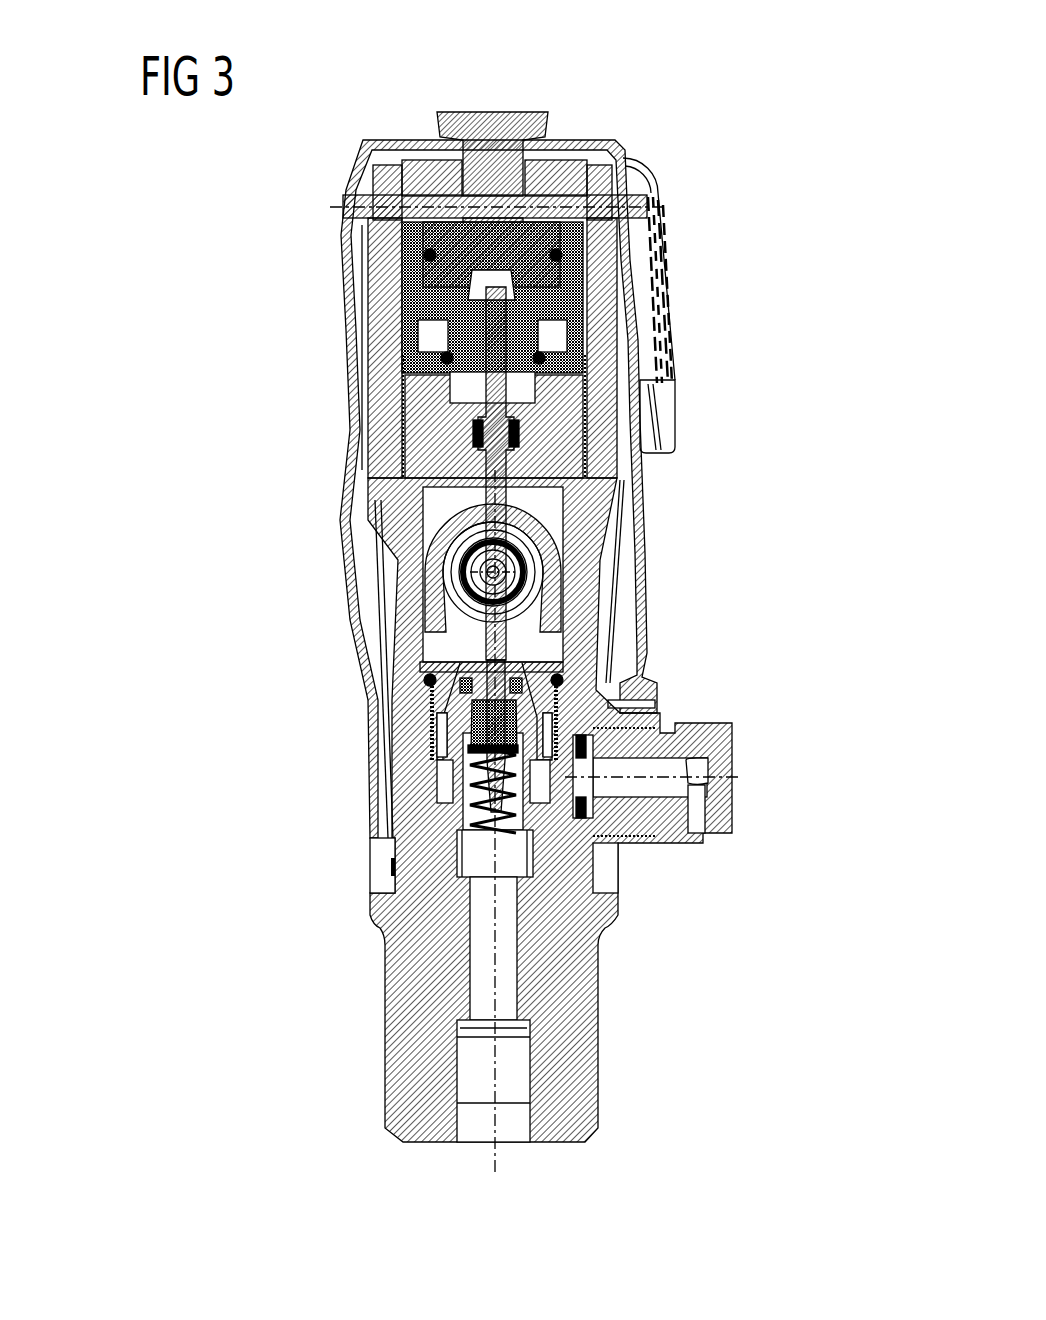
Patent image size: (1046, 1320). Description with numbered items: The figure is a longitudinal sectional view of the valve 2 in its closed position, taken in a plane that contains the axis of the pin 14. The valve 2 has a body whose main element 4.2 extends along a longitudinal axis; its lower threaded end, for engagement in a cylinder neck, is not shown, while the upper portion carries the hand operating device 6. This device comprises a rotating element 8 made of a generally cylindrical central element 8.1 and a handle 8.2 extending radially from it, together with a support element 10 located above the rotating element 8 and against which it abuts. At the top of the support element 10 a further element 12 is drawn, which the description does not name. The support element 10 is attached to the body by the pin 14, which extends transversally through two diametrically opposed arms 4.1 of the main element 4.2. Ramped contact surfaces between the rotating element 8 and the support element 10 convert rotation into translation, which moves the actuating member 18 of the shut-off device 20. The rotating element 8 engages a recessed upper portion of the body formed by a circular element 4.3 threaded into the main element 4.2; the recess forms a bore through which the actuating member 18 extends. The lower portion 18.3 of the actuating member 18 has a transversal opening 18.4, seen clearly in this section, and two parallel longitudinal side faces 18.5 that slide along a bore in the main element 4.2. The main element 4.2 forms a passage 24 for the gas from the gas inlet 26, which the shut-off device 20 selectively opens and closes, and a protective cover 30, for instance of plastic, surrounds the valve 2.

The valve 2 is at (461, 623).
The arms 4.1 is at (380, 243).
The main element 4.2 is at (385, 527).
The circular element 4.3 is at (415, 415).
The hand operating device 6 is at (781, 312).
The rotating element 8 is at (714, 305).
The central element 8.1 is at (573, 313).
The handle 8.2 is at (660, 405).
The support element 10 is at (412, 167).
The plug 12 is at (476, 130).
The pin 14 is at (345, 205).
The actuating member 18 is at (478, 559).
The lower portion 18.3 is at (532, 505).
The opening 18.4 is at (525, 545).
The side faces 18.5 is at (425, 562).
The shut-off device 20 is at (382, 753).
The passage 24 is at (440, 640).
The gas inlet 26 is at (505, 1130).
The protective cover 30 is at (353, 467).